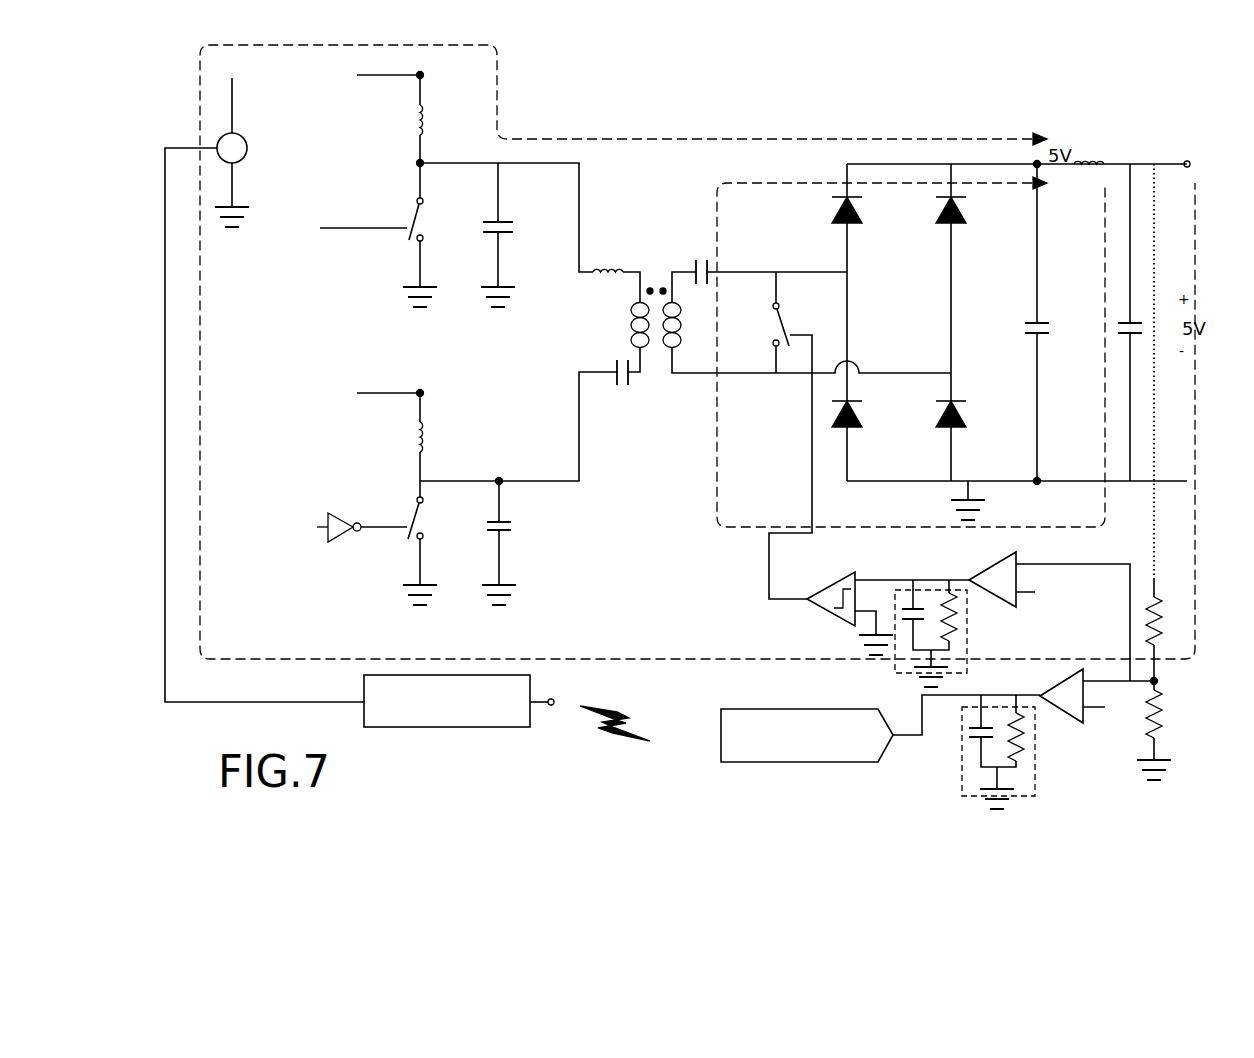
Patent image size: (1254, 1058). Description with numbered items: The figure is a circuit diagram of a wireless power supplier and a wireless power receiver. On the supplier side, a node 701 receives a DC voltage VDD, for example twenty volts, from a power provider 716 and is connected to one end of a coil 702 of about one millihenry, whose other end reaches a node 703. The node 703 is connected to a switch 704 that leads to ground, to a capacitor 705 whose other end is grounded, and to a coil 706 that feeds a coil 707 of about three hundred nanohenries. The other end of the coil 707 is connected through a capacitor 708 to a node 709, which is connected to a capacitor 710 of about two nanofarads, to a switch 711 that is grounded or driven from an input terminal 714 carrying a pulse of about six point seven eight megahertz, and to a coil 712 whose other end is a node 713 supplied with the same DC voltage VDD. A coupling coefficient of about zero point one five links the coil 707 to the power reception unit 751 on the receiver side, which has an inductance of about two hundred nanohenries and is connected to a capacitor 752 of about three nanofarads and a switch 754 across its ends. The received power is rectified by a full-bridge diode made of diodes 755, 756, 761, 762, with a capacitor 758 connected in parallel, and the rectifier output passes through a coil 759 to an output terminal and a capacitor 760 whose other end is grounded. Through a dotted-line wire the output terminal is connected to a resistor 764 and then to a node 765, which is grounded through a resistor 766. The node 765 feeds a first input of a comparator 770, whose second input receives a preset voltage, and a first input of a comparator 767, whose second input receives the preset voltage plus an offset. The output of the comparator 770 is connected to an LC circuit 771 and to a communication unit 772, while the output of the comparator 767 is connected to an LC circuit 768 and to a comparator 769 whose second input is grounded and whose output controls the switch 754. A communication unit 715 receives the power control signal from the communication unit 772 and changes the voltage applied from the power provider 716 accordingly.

The node 701 is at (423, 74).
The coil 702 is at (415, 136).
The node 703 is at (418, 166).
The switch 704 is at (406, 240).
The capacitor 705 is at (495, 234).
The coil 706 is at (605, 268).
The coil 707 is at (652, 352).
The capacitor 708 is at (615, 387).
The node 709 is at (499, 478).
The capacitor 710 is at (491, 532).
The switch 711 is at (406, 543).
The coil 712 is at (416, 435).
The node 713 is at (423, 392).
The input terminal 714 is at (328, 545).
The communication unit 715 is at (443, 728).
The power provider 716 is at (256, 180).
The power reception unit 751 is at (680, 335).
The capacitor 752 is at (703, 258).
The switch 754 is at (780, 306).
The diode 755 is at (858, 213).
The diode 756 is at (963, 213).
The capacitor 758 is at (1046, 337).
The coil 759 is at (1087, 155).
The capacitor 760 is at (1183, 358).
The diode 761 is at (860, 420).
The diode 762 is at (964, 420).
The resistor 764 is at (1160, 612).
The node 765 is at (1158, 681).
The resistor 766 is at (1162, 705).
The comparator 767 is at (1015, 551).
The LC circuit 768 is at (968, 633).
The comparator 769 is at (826, 590).
The comparator 770 is at (1085, 724).
The LC circuit 771 is at (961, 752).
The communication unit 772 is at (718, 735).